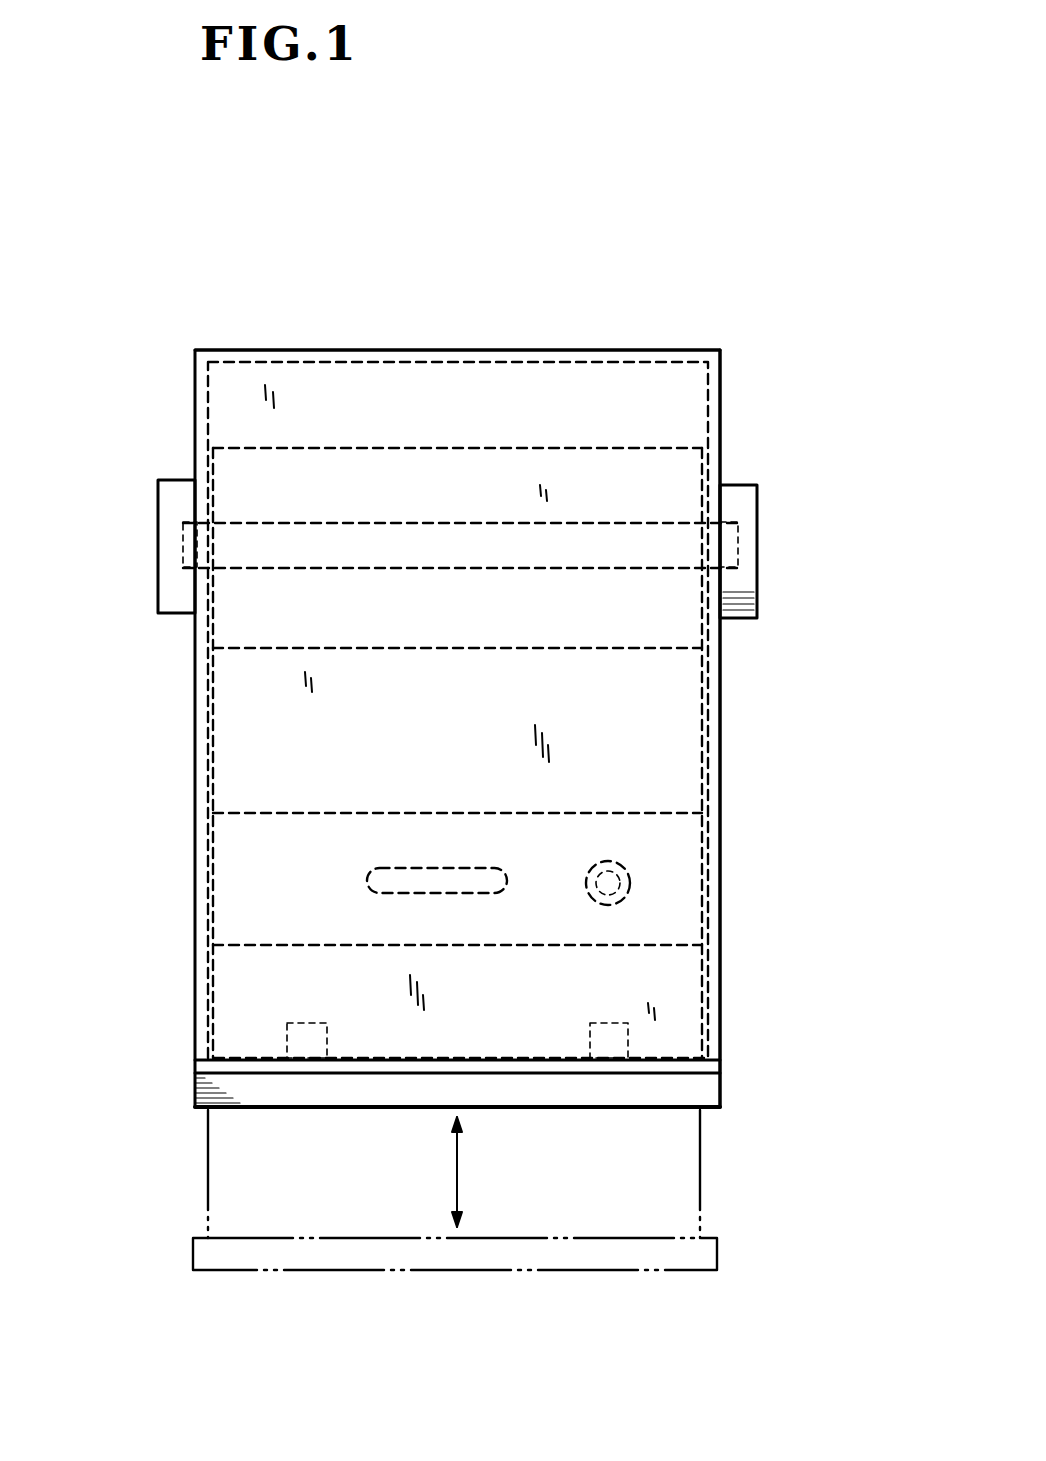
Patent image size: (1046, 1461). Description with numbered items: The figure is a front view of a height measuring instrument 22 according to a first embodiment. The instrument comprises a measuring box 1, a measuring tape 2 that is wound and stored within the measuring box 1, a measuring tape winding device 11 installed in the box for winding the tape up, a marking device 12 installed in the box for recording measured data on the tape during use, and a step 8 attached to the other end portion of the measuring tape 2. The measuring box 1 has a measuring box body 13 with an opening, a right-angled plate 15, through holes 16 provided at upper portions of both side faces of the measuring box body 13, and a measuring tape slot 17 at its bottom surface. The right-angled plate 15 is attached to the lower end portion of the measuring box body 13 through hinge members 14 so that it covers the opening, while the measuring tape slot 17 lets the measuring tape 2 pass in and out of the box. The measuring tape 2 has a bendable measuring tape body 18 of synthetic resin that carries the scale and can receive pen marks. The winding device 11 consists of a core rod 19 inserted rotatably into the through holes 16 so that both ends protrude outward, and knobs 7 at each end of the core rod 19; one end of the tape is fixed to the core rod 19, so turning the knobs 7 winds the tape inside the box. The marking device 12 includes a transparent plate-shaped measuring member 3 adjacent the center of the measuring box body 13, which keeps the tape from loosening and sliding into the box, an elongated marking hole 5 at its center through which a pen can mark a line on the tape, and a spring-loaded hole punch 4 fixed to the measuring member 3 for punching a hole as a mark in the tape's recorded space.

The measuring box 1 is at (612, 348).
The measuring tape 2 is at (700, 702).
The measuring member 3 is at (722, 840).
The hole punch 4 is at (608, 862).
The marking hole 5 is at (437, 868).
The knob 7 is at (757, 565).
The step 8 is at (720, 1094).
The measuring tape winding device 11 is at (158, 484).
The marking device 12 is at (203, 906).
The measuring box body 13 is at (722, 392).
The hinge member 14 is at (308, 1060).
The right-angled plate 15 is at (497, 362).
The through hole 16 is at (180, 560).
The measuring tape slot 17 is at (195, 1032).
The measuring tape body 18 is at (218, 738).
The core rod 19 is at (735, 530).
The height measuring instrument 22 is at (238, 290).